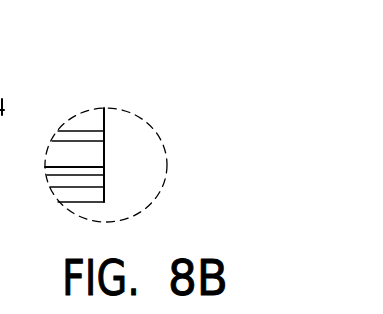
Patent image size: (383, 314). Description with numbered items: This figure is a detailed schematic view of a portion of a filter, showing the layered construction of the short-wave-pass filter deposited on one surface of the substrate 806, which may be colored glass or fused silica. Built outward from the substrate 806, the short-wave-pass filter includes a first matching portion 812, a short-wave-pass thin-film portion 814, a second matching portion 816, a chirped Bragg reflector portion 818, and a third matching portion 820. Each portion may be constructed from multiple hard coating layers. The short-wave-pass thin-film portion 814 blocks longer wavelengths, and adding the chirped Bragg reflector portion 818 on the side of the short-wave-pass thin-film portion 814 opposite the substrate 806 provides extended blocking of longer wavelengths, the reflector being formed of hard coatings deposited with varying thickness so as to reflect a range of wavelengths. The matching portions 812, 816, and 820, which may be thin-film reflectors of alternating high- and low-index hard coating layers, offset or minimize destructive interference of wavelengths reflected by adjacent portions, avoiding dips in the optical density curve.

The substrate 806 is at (95, 121).
The first matching portion 812 is at (98, 137).
The short-wave-pass thin-film portion 814 is at (95, 153).
The second matching portion 816 is at (100, 171).
The chirped Bragg reflector portion 818 is at (99, 183).
The third matching portion 820 is at (99, 195).